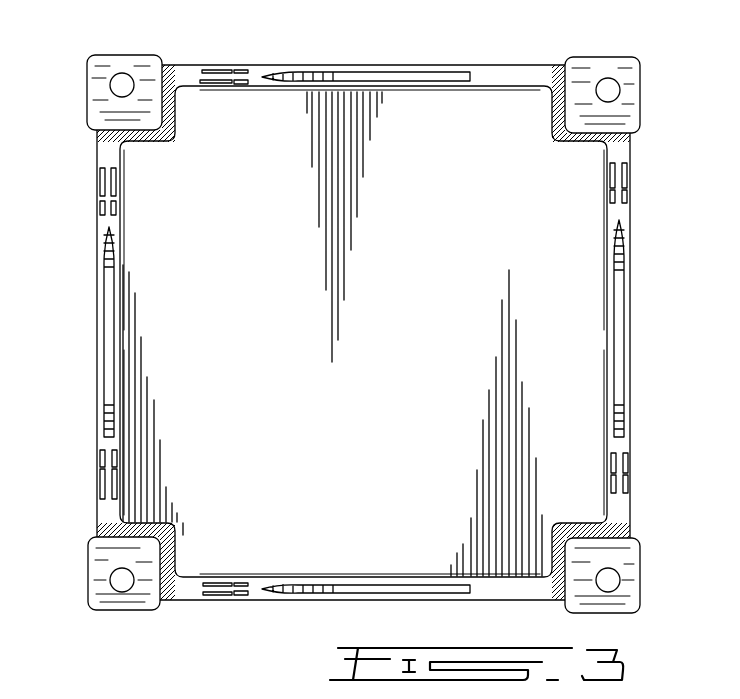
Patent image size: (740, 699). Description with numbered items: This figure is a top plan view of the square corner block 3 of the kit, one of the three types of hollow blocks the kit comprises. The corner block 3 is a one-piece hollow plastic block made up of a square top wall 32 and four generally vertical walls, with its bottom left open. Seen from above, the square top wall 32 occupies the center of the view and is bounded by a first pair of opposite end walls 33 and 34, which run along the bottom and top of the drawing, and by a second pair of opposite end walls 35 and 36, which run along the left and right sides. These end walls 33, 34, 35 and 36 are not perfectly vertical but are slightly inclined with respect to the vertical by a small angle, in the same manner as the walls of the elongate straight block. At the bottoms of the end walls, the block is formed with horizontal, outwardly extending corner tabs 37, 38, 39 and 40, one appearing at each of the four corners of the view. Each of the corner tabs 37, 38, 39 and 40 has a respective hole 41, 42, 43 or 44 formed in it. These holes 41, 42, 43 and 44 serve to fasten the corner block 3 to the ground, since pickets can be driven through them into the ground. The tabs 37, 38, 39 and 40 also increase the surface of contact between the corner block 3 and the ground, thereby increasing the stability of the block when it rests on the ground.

The square corner block 3 is at (664, 250).
The square top wall 32 is at (276, 123).
The end wall 33 is at (261, 592).
The end wall 34 is at (466, 72).
The end wall 35 is at (105, 438).
The end wall 36 is at (625, 438).
The corner tab 37 is at (130, 58).
The corner tab 38 is at (632, 74).
The corner tab 39 is at (630, 600).
The corner tab 40 is at (129, 606).
The hole 41 is at (118, 90).
The hole 42 is at (608, 84).
The hole 43 is at (612, 580).
The hole 44 is at (118, 580).